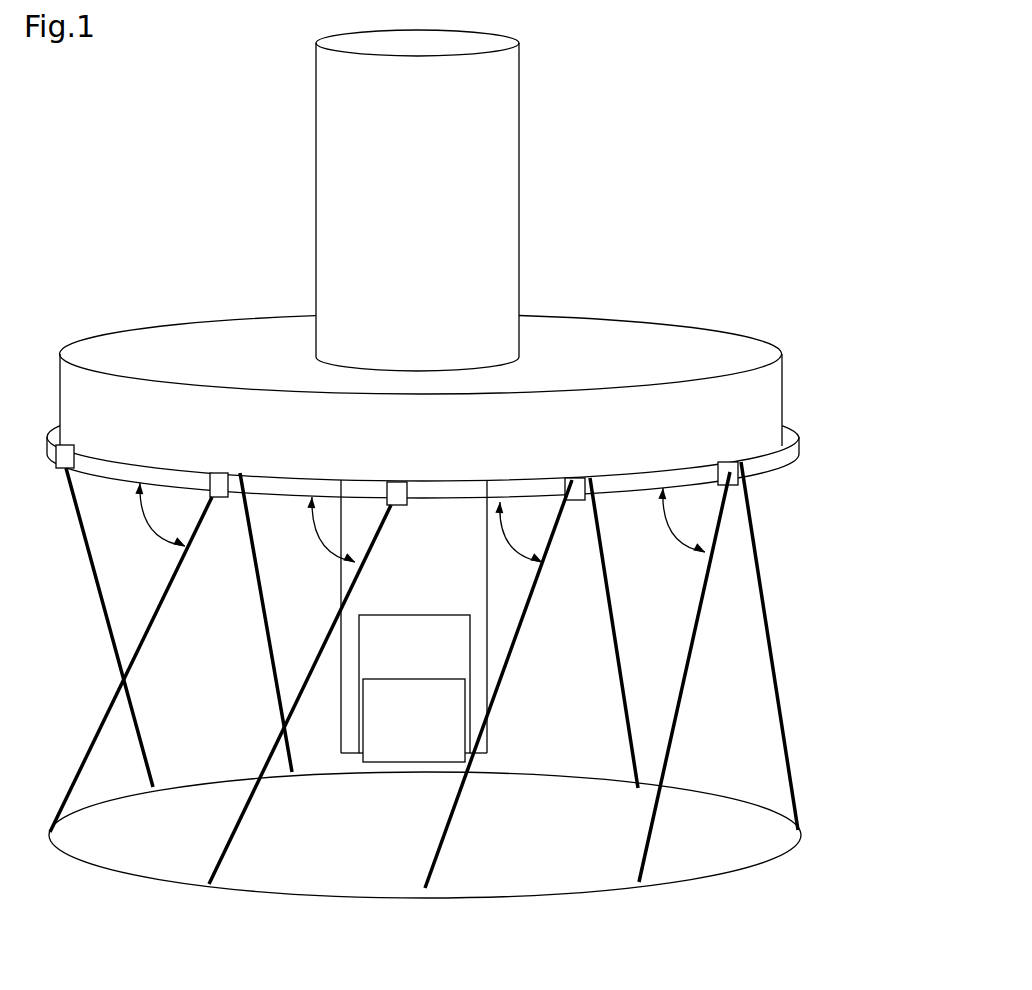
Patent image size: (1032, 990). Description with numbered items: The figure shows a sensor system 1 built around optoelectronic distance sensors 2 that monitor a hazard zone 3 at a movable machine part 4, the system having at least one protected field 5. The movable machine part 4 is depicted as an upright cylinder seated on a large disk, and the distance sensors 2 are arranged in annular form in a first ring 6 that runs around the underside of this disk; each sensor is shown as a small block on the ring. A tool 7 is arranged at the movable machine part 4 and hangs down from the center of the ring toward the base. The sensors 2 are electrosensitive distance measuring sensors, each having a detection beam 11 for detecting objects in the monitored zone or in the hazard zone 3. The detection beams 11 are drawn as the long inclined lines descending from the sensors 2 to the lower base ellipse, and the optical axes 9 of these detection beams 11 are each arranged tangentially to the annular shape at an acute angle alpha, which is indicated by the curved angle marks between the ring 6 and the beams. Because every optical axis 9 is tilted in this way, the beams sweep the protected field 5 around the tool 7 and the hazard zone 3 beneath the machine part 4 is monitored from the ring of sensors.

The sensor system 1 is at (808, 243).
The optoelectronic distance sensor 2 is at (70, 452).
The hazard zone 3 is at (830, 702).
The movable machine part 4 is at (500, 150).
The protected field 5 is at (810, 625).
The first ring 6 is at (784, 458).
The tool 7 is at (463, 567).
The optical axis 9 is at (441, 675).
The detection beam 11 is at (146, 637).